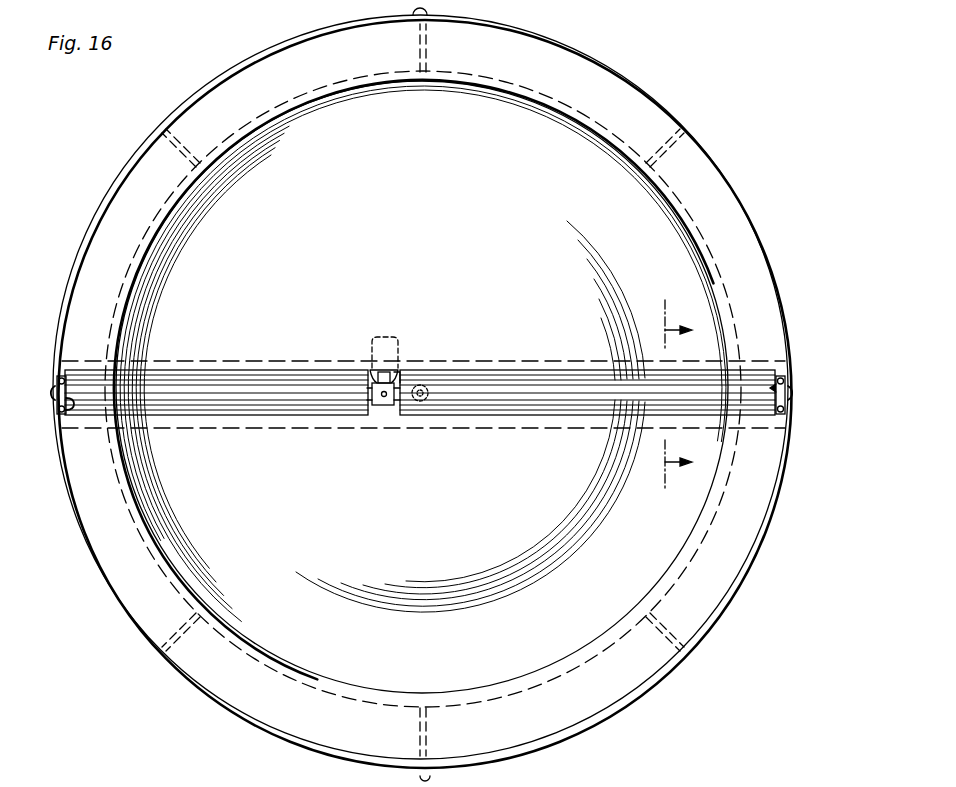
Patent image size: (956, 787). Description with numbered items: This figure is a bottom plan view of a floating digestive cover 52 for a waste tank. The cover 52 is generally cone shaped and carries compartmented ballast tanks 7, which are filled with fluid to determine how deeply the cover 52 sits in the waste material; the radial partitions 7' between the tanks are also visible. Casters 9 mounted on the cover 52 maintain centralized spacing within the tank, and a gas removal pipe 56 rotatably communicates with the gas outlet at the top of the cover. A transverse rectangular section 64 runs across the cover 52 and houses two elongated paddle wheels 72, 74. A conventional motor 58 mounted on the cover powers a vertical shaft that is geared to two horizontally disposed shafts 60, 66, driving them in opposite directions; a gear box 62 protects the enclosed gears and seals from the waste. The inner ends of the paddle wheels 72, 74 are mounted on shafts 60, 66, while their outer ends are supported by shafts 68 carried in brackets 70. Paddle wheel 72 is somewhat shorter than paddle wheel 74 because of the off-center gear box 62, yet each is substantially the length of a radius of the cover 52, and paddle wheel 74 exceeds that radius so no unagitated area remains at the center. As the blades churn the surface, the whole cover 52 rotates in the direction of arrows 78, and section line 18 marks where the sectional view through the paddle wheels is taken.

The digestive cover 52 is at (598, 56).
The compartmented ballast tanks 7 is at (399, 389).
The radial spoke 7' is at (423, 390).
The casters 9 is at (410, 12).
The arrows 78 is at (255, 315).
The transverse rectangular section 64 is at (290, 420).
The paddle wheel 72 is at (303, 375).
The paddle wheel 74 is at (495, 391).
The gear box 62 is at (384, 406).
The horizontally disposed shaft 60 is at (369, 369).
The horizontally disposed shaft 66 is at (402, 372).
The motor 58 is at (384, 338).
The shafts 68 is at (62, 412).
The brackets 70 is at (55, 388).
The section line 18 is at (664, 395).
The gas removal pipe 56 is at (210, 782).